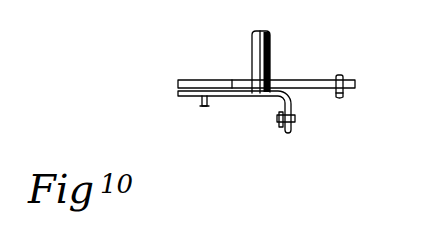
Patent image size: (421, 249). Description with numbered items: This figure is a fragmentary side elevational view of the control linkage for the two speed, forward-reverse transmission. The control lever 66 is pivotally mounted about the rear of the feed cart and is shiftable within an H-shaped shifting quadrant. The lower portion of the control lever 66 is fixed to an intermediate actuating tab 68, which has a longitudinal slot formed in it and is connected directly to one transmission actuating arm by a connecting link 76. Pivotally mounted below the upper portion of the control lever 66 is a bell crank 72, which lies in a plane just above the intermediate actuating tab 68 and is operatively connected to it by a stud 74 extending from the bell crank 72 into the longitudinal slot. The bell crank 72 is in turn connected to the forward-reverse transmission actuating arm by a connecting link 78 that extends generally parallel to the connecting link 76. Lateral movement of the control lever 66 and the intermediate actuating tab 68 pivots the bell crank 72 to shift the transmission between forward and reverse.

The control lever 66 is at (271, 52).
The intermediate actuating tab 68 is at (246, 97).
The bell crank 72 is at (314, 80).
The stud 74 is at (200, 108).
The connecting link 76 is at (296, 118).
The connecting link 78 is at (341, 74).